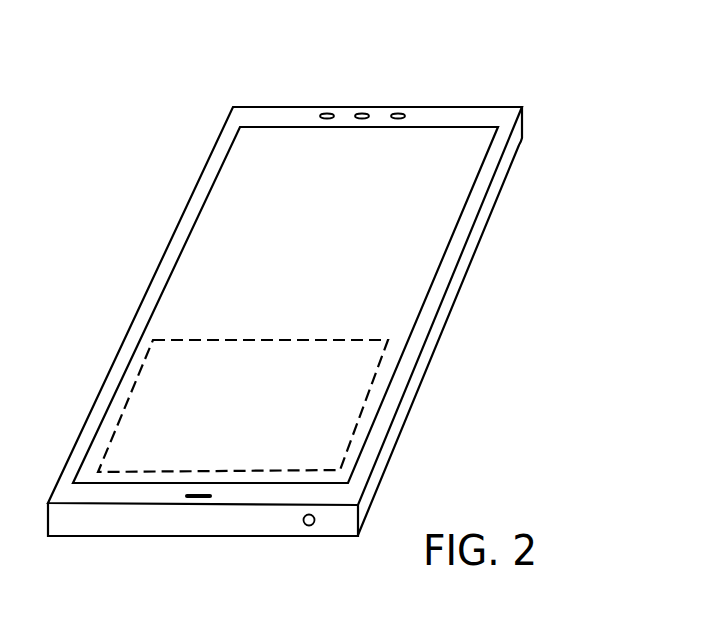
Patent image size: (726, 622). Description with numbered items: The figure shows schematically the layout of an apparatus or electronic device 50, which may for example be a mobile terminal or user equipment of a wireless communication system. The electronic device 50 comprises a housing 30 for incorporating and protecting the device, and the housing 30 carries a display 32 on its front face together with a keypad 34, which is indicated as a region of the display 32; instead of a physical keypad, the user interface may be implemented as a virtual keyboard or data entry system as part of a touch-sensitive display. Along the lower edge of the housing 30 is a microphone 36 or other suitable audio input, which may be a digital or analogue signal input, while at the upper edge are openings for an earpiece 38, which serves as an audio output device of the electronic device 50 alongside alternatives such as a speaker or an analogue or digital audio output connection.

The housing 30 is at (253, 107).
The display 32 is at (422, 234).
The keypad 34 is at (345, 422).
The microphone 36 is at (203, 498).
The earpiece 38 is at (360, 113).
The electronic device 50 is at (549, 70).